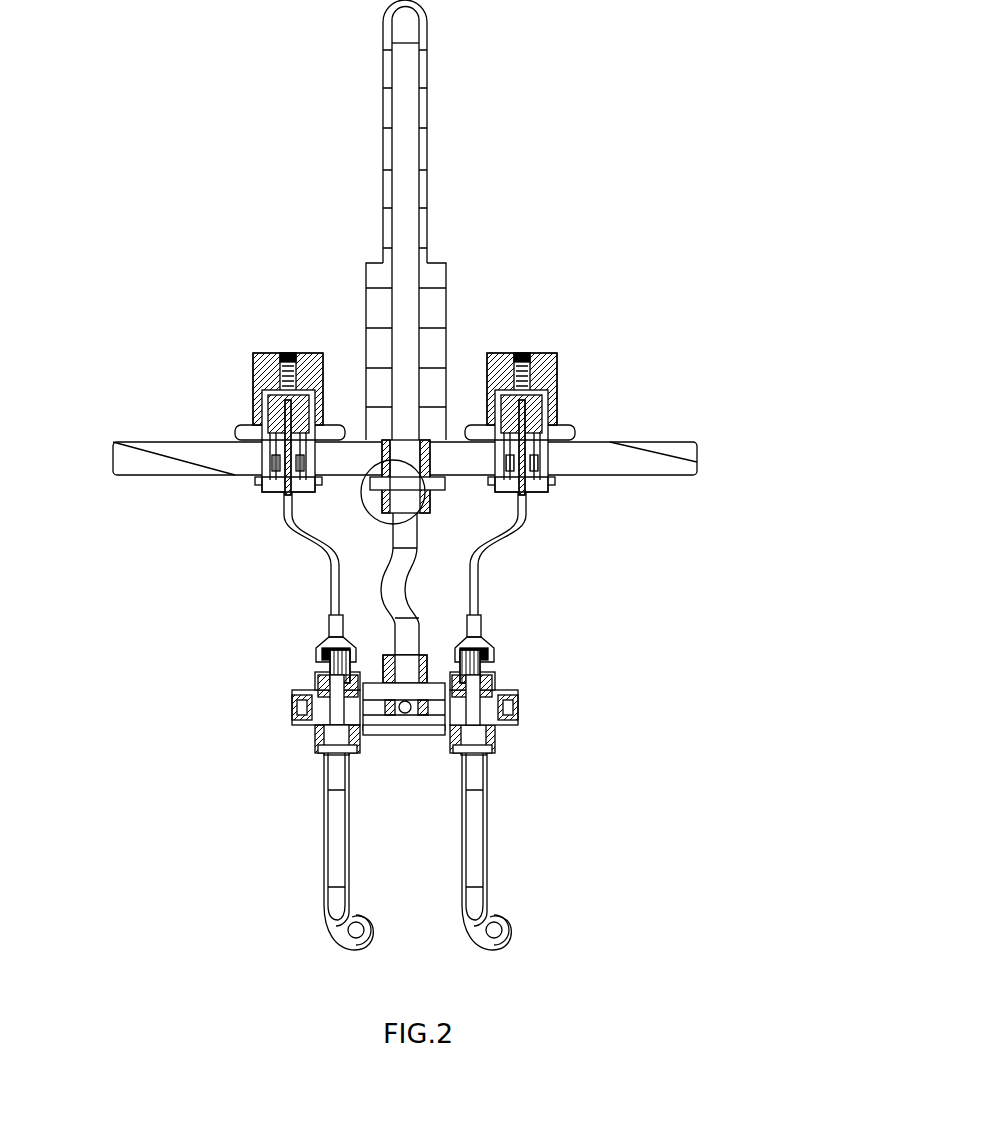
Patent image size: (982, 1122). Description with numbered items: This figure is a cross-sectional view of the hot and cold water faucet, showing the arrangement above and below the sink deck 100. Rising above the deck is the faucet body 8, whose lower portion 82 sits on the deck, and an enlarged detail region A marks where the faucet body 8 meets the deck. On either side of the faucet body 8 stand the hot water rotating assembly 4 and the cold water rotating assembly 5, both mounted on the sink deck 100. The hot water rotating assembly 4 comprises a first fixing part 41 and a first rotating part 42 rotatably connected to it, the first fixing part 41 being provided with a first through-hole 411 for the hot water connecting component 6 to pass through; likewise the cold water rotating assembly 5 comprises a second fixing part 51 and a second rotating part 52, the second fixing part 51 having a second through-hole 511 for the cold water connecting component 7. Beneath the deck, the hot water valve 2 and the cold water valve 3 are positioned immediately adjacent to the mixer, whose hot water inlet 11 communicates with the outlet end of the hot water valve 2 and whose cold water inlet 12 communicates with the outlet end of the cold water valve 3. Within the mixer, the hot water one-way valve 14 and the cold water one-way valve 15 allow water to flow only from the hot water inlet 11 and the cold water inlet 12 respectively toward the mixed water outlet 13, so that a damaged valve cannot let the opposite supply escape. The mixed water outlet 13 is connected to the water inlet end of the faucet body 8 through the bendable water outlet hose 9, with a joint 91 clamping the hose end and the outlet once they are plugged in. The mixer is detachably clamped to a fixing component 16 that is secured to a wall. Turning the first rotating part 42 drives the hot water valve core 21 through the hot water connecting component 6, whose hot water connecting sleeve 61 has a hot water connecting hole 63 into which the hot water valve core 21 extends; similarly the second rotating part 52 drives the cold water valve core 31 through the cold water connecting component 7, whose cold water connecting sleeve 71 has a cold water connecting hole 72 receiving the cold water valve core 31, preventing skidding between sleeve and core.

The faucet body 8 is at (420, 197).
The spout base 82 is at (432, 333).
The sink deck 100 is at (697, 455).
The hot water rotating assembly 4 is at (197, 430).
The first rotating part 42 is at (262, 370).
The first fixing part 41 is at (258, 425).
The first through-hole 411 is at (286, 492).
The cold water rotating assembly 5 is at (629, 441).
The second rotating part 52 is at (548, 380).
The second fixing part 51 is at (556, 420).
The second through-hole 511 is at (536, 492).
The hot water connecting component 6 is at (337, 568).
The hot water connecting sleeve 61 is at (334, 625).
The hot water connecting hole 63 is at (320, 650).
The cold water connecting component 7 is at (474, 585).
The cold water connecting sleeve 71 is at (480, 627).
The cold water connecting hole 72 is at (493, 645).
The water outlet hose 9 is at (418, 546).
The joint 91 is at (393, 618).
The hot water valve core 21 is at (320, 670).
The cold water valve core 31 is at (492, 668).
The hot water one-way valve 14 is at (322, 690).
The mixed water outlet 13 is at (495, 688).
The hot water inlet 11 is at (302, 702).
The cold water inlet 12 is at (480, 720).
The hot water valve 2 is at (333, 738).
The cold water valve 3 is at (482, 740).
The cold water one-way valve 15 is at (472, 752).
The fixing component 16 is at (405, 733).
The detail region A is at (364, 500).